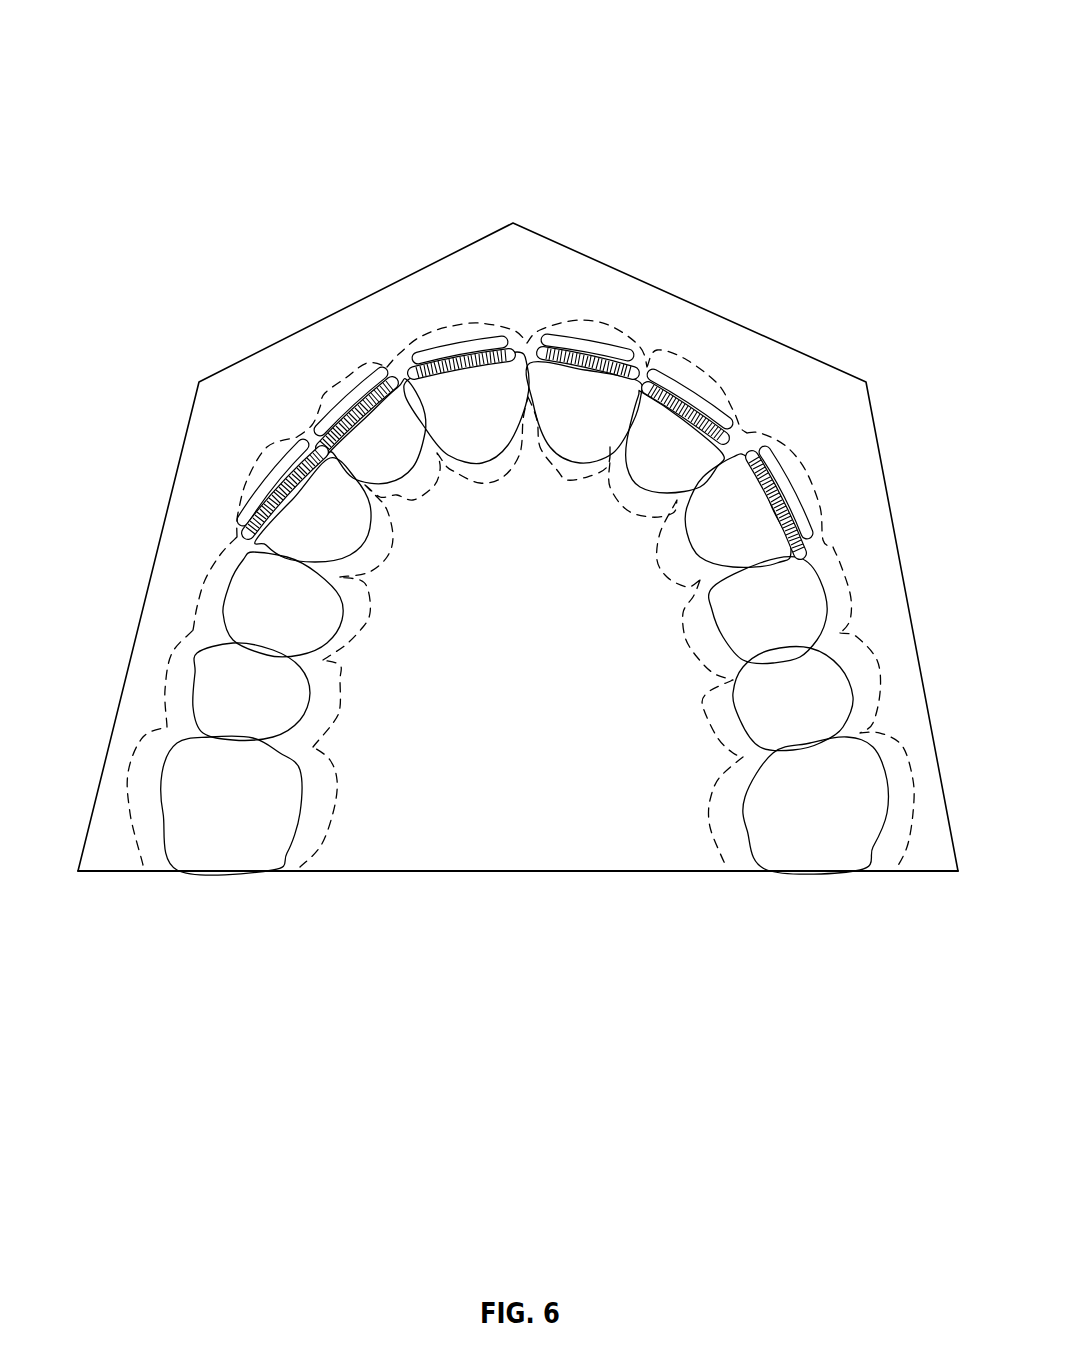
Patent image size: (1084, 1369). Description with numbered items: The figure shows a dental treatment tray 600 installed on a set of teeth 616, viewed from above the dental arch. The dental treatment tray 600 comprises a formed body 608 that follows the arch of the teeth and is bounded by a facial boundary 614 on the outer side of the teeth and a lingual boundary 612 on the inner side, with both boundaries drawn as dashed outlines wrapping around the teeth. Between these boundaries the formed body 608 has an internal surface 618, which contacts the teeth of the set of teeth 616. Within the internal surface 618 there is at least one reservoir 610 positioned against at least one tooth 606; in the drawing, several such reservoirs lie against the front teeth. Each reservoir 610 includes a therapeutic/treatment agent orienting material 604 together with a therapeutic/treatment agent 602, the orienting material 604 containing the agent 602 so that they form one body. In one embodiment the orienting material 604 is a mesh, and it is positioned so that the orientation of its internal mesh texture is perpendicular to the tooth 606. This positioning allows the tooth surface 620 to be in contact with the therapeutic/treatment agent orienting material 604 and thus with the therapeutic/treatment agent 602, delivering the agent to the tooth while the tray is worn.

The dental treatment tray 600 is at (835, 77).
The therapeutic/treatment agent 602 is at (357, 389).
The therapeutic/treatment agent orienting material 604 is at (388, 372).
The tooth 606 is at (400, 460).
The formed body 608 is at (293, 383).
The reservoir 610 is at (317, 413).
The lingual boundary 612 is at (340, 702).
The facial boundary 614 is at (172, 657).
The set of teeth 616 is at (237, 887).
The internal surface 618 is at (565, 490).
The tooth surface 620 is at (227, 588).